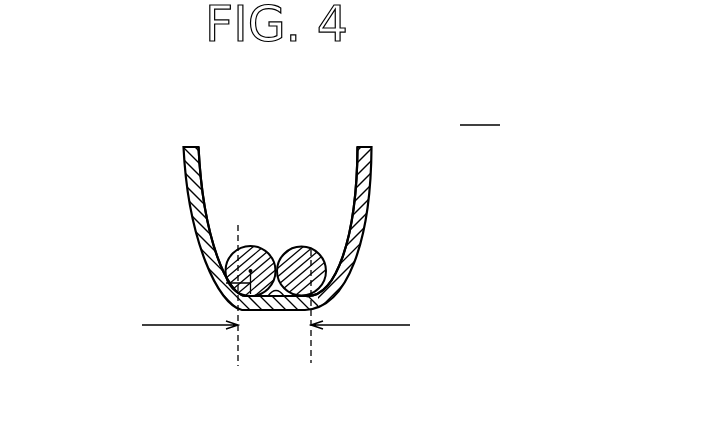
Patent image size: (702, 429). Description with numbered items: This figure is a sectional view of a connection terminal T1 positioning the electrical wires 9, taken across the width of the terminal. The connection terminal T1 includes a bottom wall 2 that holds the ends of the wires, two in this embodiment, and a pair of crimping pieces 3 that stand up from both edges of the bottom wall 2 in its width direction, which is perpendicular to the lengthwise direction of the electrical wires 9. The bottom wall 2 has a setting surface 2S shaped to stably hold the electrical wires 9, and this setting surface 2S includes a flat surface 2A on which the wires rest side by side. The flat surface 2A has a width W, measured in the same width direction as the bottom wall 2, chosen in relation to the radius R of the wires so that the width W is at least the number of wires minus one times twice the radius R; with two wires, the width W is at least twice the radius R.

The bottom wall 2 is at (310, 326).
The flat surface 2A is at (283, 323).
The setting surface 2S is at (349, 281).
The crimping pieces 3 is at (196, 190).
The electrical wires 9 is at (303, 247).
The radius of the wires R is at (218, 276).
The width of the flat surface W is at (263, 328).
The connection terminal T1 is at (480, 112).